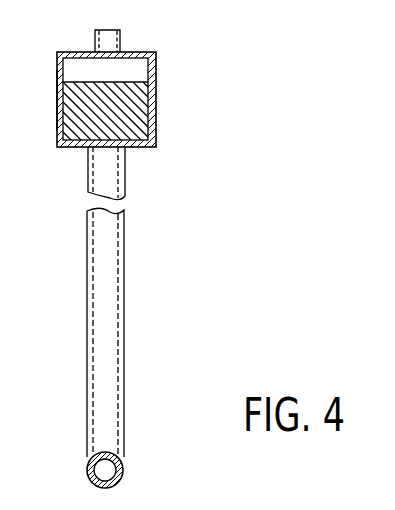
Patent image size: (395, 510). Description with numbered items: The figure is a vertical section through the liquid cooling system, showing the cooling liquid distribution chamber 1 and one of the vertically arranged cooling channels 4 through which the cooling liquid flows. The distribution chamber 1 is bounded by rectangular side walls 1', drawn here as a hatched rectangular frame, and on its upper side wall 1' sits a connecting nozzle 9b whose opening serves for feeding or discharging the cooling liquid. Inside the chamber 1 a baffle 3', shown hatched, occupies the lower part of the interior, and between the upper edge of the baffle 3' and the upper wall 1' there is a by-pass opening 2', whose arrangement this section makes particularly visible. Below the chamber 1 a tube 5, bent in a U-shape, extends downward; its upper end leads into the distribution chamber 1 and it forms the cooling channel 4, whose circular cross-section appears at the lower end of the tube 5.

The cooling liquid distribution chamber 1 is at (123, 99).
The side wall 1' is at (34, 100).
The by-pass opening 2' is at (137, 55).
The baffle 3' is at (107, 115).
The connecting nozzle 9b is at (120, 37).
The tube 5 is at (103, 292).
The cooling channel 4 is at (105, 468).